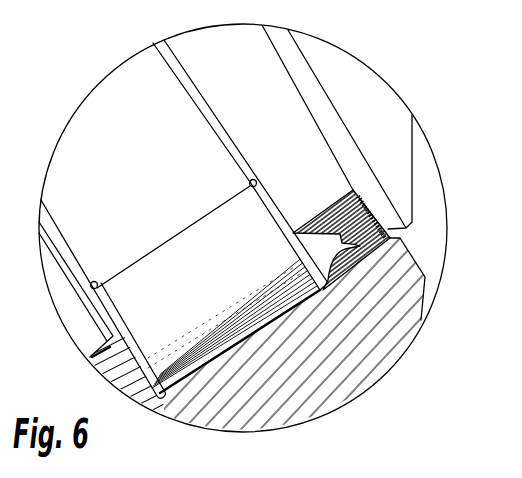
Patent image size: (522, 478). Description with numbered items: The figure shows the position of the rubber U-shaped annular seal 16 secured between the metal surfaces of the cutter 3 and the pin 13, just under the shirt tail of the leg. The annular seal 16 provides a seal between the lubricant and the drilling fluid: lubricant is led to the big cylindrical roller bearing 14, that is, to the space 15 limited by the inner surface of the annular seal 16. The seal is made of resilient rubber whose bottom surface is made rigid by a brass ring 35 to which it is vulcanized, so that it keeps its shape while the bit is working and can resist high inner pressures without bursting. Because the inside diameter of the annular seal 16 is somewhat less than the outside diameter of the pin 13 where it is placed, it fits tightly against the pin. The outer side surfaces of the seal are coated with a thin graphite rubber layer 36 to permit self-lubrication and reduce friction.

The cutter 3 is at (366, 341).
The pin 13 is at (382, 107).
The big cylindrical roller bearing 14 is at (280, 300).
The space 15 is at (381, 226).
The annular seal 16 is at (345, 250).
The brass ring 35 is at (370, 203).
The graphite rubber layer 36 is at (348, 275).